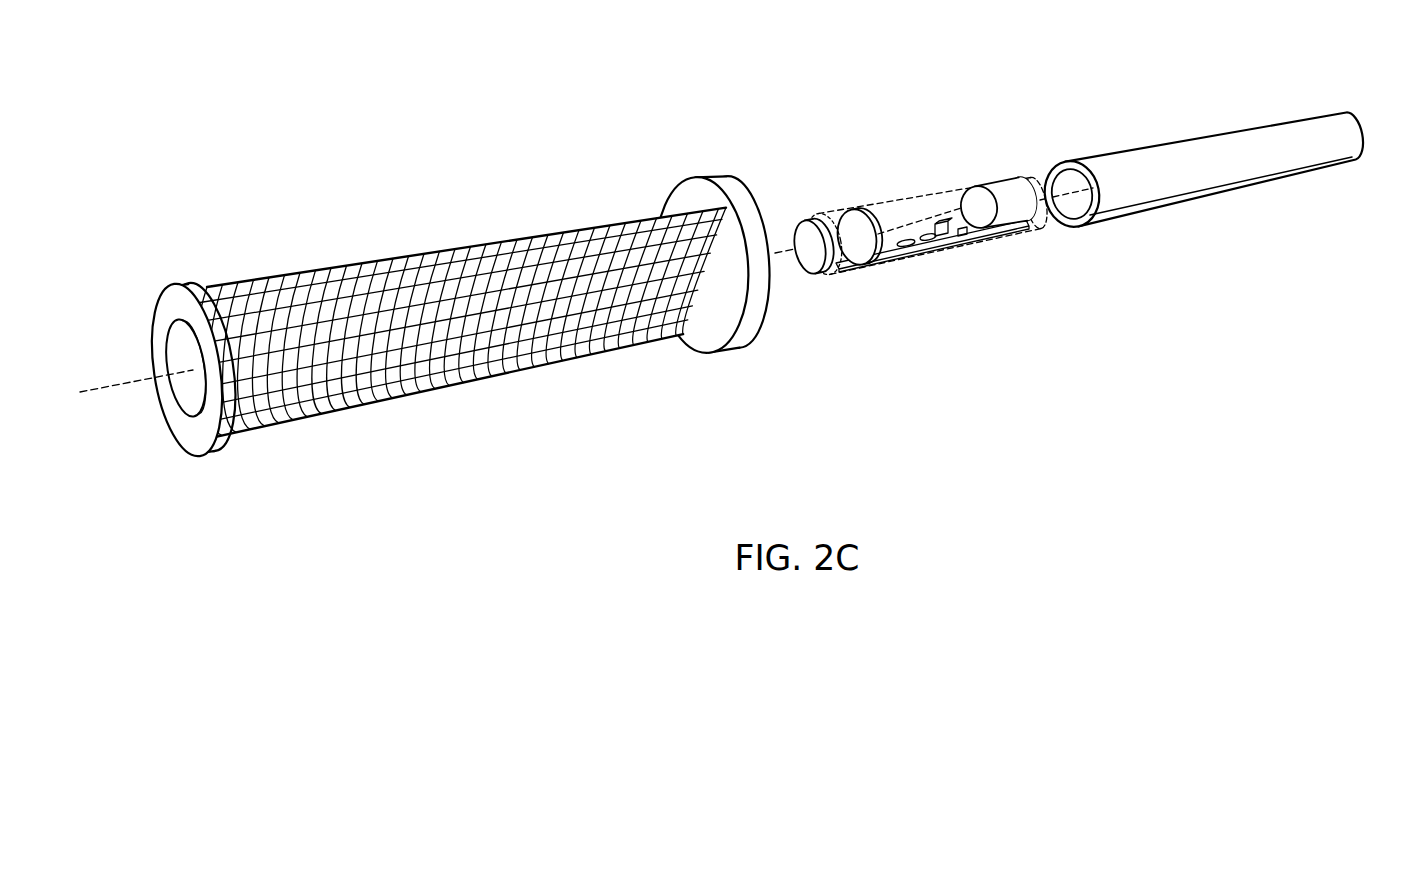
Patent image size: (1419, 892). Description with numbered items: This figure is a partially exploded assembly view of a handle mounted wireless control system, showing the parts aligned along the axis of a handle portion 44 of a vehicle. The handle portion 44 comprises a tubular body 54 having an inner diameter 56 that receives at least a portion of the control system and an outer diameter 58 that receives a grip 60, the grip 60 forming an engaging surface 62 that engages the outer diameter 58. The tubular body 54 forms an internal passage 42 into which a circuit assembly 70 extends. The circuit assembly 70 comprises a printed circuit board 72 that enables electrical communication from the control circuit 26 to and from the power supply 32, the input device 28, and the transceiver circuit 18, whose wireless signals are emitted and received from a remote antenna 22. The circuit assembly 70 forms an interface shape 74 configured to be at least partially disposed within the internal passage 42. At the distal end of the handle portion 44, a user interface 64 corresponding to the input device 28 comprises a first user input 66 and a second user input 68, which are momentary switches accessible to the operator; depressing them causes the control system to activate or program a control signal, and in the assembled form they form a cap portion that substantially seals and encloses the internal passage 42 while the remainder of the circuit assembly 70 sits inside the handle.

The remote transceiver circuit 18 is at (893, 213).
The remote antenna 22 is at (861, 262).
The control circuit 26 is at (927, 220).
The input device 28 is at (800, 290).
The power supply 32 is at (1008, 215).
The internal passage 42 is at (1048, 197).
The handle portion 44 is at (1175, 145).
The tubular body 54 is at (1263, 136).
The inner diameter 56 is at (1056, 181).
The outer diameter 58 is at (1203, 183).
The grip 60 is at (458, 248).
The engaging surface 62 is at (195, 393).
The user interface 64 is at (819, 246).
The first user input 66 is at (791, 247).
The second user input 68 is at (772, 248).
The circuit assembly 70 is at (860, 88).
The printed circuit board 72 is at (913, 257).
The interface shape 74 is at (944, 243).